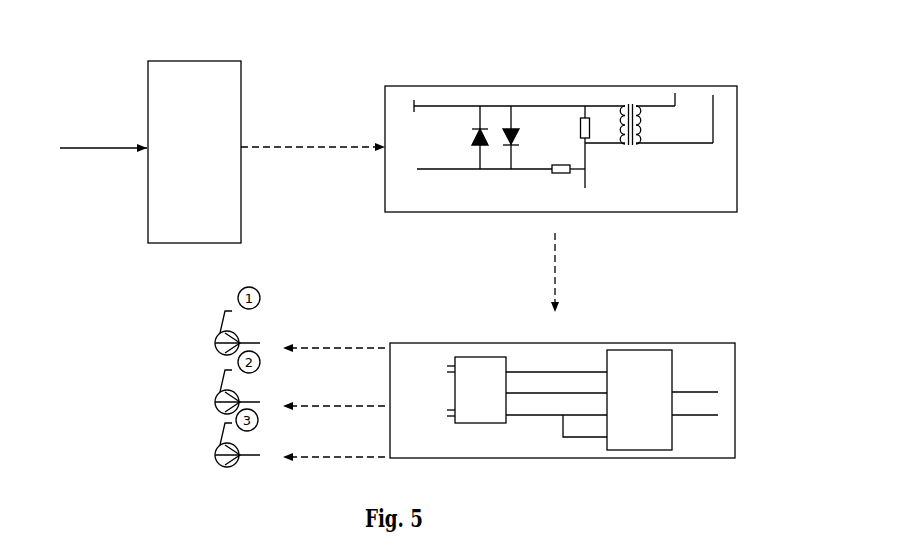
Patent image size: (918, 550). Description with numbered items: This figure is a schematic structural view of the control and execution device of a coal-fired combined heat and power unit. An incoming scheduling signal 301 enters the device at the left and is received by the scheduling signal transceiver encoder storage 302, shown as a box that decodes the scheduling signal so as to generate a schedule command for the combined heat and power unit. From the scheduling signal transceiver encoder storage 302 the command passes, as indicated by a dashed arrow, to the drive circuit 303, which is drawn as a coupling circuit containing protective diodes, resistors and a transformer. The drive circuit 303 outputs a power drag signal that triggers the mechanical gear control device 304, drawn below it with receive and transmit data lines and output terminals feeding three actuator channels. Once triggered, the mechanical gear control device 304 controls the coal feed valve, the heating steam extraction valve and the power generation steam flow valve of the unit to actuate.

The scheduling signal input 301 is at (70, 147).
The scheduling signal transceiver encoder storage 302 is at (182, 61).
The drive circuit 303 is at (529, 95).
The mechanical gear control device 304 is at (582, 352).